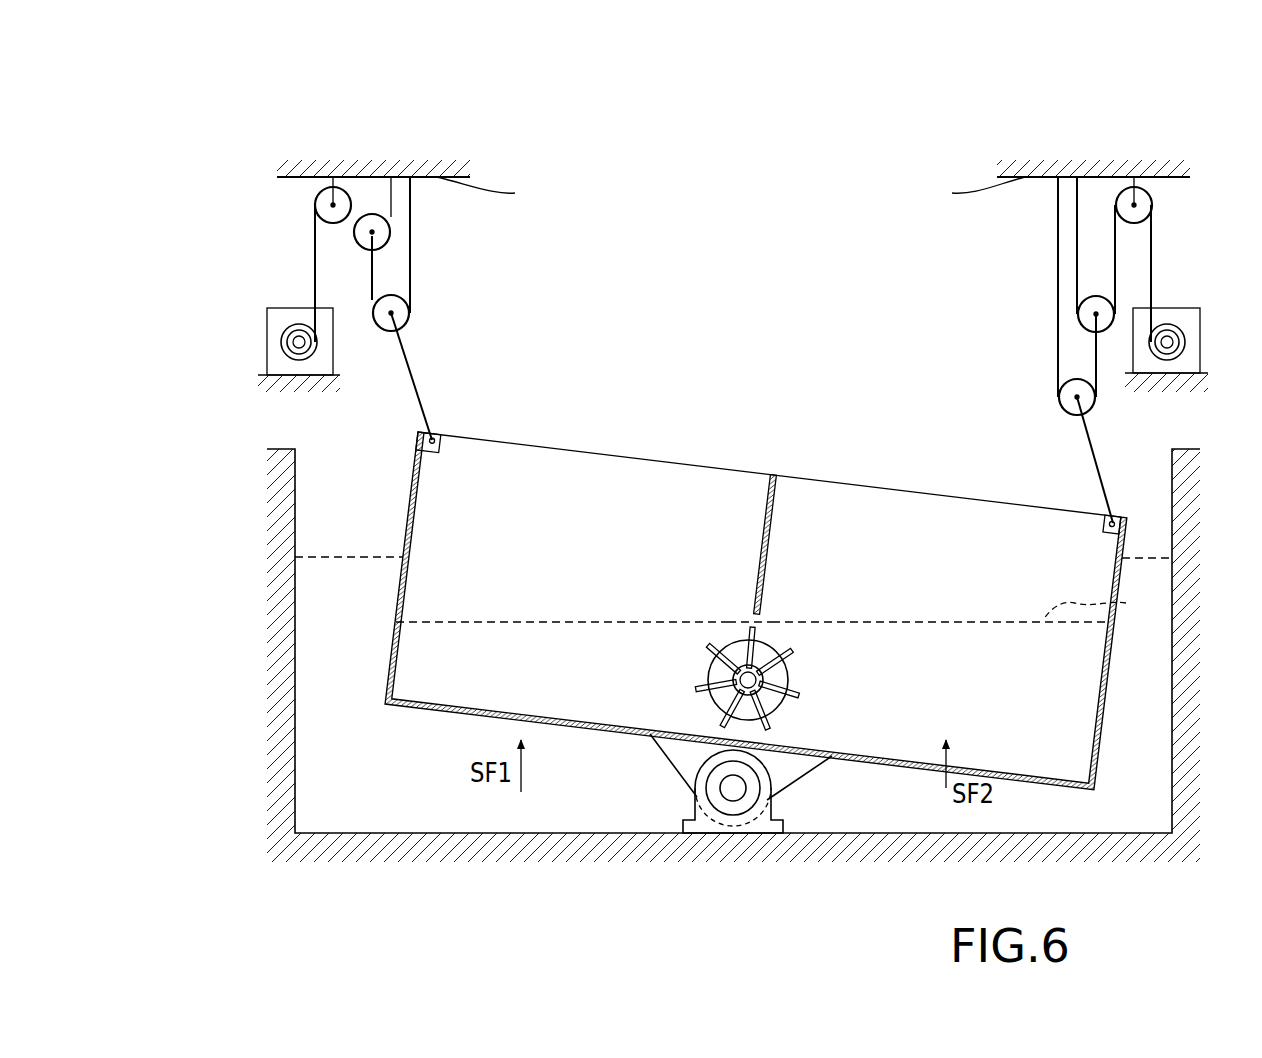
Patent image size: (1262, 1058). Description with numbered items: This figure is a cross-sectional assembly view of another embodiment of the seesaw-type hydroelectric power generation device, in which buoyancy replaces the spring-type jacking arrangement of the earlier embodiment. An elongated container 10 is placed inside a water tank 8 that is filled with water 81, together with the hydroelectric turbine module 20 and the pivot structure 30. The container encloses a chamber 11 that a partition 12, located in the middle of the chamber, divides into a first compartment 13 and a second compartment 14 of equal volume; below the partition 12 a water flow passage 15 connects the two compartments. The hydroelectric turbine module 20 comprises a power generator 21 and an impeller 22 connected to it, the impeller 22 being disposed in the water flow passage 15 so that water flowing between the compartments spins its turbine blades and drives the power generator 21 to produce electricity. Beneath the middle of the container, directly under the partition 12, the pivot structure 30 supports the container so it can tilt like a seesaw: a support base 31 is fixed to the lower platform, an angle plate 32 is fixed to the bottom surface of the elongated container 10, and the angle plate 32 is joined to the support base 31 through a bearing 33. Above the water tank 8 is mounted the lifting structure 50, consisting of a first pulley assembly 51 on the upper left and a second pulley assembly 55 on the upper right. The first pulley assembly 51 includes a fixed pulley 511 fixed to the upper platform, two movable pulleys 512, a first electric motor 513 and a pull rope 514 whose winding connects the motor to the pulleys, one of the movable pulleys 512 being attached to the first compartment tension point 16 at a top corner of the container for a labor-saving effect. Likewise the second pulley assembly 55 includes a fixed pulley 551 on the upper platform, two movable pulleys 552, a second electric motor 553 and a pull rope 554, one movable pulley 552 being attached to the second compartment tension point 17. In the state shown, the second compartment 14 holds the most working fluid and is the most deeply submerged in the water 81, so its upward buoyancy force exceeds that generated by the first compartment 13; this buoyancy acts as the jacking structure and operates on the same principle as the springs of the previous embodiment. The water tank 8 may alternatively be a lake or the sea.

The water tank 8 is at (313, 470).
The elongated container 10 is at (733, 559).
The chamber 11 is at (717, 606).
The partition 12 is at (782, 510).
The first compartment 13 is at (578, 503).
The second compartment 14 is at (890, 530).
The water flow passage 15 is at (746, 613).
The first compartment tension point 16 is at (384, 442).
The second compartment tension point 17 is at (1118, 478).
The hydroelectric turbine module 20 is at (830, 683).
The power generator 21 is at (783, 678).
The impeller 22 is at (765, 727).
The pivot structure 30 is at (741, 842).
The support base 31 is at (690, 818).
The angle plate 32 is at (783, 775).
The bearing 33 is at (735, 793).
The lifting structure 50 is at (704, 282).
The first pulley assembly 51 is at (394, 262).
The fixed pulley 511 is at (316, 200).
The movable pulleys 512 is at (400, 313).
The first electric motor 513 is at (290, 310).
The pull rope 514 is at (412, 225).
The second pulley assembly 55 is at (1073, 303).
The fixed pulley 551 is at (1152, 198).
The movable pulleys 552 is at (1068, 395).
The second electric motor 553 is at (1176, 310).
The pull rope 554 is at (1058, 225).
The water 81 is at (1148, 558).